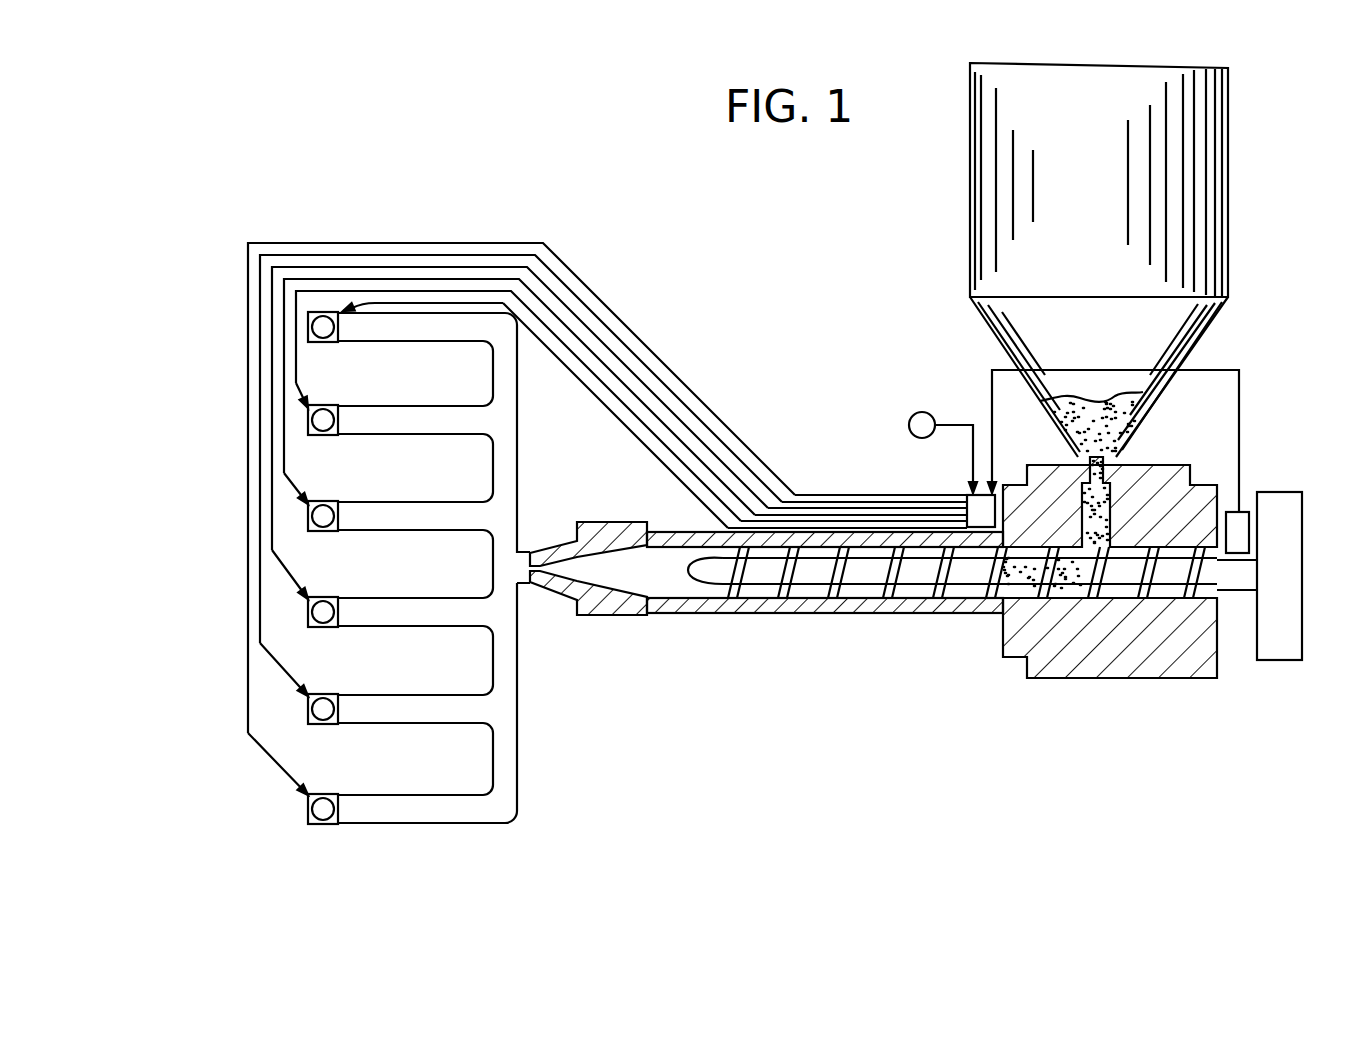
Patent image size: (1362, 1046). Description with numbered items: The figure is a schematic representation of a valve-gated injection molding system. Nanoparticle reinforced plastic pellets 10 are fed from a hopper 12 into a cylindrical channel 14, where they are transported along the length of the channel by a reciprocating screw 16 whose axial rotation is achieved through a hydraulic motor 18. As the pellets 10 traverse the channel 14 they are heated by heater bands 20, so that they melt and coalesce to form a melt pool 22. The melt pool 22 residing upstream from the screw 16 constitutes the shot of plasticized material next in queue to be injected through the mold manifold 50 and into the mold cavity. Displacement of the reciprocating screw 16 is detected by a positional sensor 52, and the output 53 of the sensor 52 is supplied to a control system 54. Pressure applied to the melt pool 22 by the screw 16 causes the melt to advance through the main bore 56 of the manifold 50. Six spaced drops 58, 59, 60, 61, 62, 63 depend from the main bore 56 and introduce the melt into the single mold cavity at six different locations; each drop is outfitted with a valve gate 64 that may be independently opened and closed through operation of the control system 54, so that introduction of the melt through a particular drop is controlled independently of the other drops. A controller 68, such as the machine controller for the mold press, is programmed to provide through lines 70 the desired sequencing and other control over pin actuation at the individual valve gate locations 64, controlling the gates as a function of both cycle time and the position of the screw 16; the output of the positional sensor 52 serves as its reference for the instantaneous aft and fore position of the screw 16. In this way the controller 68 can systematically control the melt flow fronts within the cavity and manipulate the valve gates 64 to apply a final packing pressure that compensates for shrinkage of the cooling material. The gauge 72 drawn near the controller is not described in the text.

The plastic pellets 10 is at (1112, 427).
The hopper 12 is at (1230, 186).
The cylindrical channel 14 is at (752, 612).
The reciprocating screw 16 is at (921, 609).
The hydraulic motor 18 is at (1275, 662).
The heater bands 20 is at (847, 613).
The melt pool 22 is at (664, 582).
The mold manifold 50 is at (543, 736).
The positional sensor 52 is at (1249, 518).
The output of the sensor 53 is at (1240, 396).
The control system 54 is at (760, 428).
The main bore 56 is at (517, 486).
The manifold drop 58 is at (437, 341).
The manifold drop 59 is at (441, 434).
The manifold drop 60 is at (440, 530).
The manifold drop 61 is at (442, 626).
The manifold drop 62 is at (448, 723).
The manifold drop 63 is at (447, 823).
The valve gate 64 is at (330, 342).
The controller 68 is at (967, 497).
The lines 70 is at (633, 313).
The voltage gauge 72 is at (922, 412).